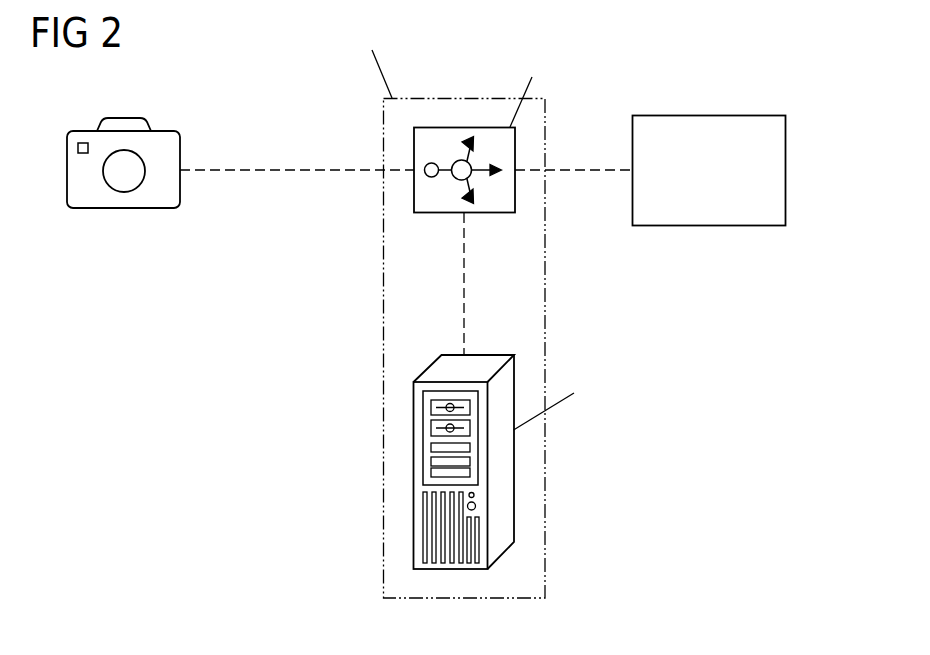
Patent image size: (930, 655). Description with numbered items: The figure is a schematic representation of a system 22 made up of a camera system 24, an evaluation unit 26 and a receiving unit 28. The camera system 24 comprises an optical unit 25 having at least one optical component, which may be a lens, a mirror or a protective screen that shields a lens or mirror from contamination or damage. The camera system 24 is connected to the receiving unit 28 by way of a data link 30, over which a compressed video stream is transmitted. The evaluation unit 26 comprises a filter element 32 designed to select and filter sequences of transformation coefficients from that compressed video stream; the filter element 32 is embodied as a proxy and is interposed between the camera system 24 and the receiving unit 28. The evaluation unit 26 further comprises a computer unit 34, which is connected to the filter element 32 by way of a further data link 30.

The system 22 is at (738, 63).
The camera system 24 is at (97, 208).
The optical unit 25 is at (143, 181).
The evaluation unit 26 is at (383, 427).
The receiving unit 28 is at (705, 226).
The data link 30 is at (305, 172).
The filter element 32 is at (436, 213).
The computer unit 34 is at (514, 508).